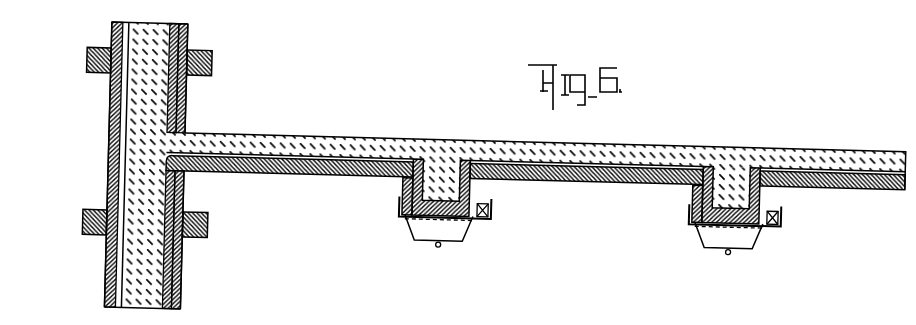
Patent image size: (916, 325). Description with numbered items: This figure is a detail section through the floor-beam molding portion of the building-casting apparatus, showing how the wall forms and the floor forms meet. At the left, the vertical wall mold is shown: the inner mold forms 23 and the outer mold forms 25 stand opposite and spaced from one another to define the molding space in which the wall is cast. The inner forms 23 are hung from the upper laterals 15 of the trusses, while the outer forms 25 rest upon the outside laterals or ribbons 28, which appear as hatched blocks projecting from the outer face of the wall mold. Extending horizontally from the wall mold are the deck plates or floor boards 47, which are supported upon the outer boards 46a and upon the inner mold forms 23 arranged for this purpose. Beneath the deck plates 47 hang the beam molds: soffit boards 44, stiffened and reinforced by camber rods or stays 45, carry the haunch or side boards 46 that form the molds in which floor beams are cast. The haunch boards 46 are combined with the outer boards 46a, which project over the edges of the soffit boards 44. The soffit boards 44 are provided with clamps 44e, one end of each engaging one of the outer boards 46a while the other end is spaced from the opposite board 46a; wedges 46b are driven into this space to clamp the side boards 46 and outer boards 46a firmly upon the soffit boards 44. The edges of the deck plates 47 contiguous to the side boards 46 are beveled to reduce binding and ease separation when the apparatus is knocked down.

The upper laterals 15 is at (213, 58).
The inner mold forms 23 is at (187, 105).
The outer mold forms 25 is at (112, 133).
The outside laterals or ribbons 28 is at (87, 72).
The soffit boards 44 is at (425, 215).
The clamps 44e is at (483, 217).
The camber rods or stays 45 is at (443, 247).
The haunch or side boards 46 is at (460, 170).
The outer boards 46a is at (692, 198).
The wedges 46b is at (482, 185).
The deck plates or floor boards 47 is at (292, 172).